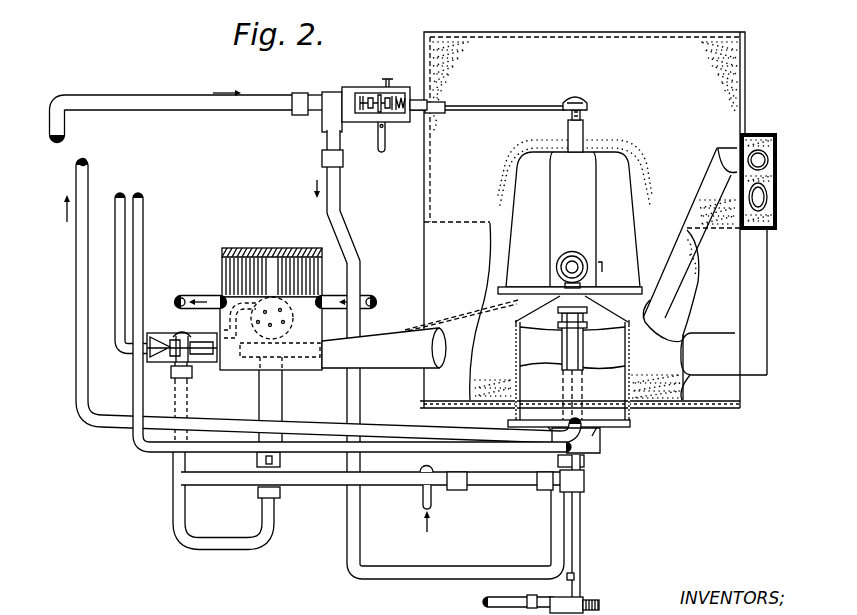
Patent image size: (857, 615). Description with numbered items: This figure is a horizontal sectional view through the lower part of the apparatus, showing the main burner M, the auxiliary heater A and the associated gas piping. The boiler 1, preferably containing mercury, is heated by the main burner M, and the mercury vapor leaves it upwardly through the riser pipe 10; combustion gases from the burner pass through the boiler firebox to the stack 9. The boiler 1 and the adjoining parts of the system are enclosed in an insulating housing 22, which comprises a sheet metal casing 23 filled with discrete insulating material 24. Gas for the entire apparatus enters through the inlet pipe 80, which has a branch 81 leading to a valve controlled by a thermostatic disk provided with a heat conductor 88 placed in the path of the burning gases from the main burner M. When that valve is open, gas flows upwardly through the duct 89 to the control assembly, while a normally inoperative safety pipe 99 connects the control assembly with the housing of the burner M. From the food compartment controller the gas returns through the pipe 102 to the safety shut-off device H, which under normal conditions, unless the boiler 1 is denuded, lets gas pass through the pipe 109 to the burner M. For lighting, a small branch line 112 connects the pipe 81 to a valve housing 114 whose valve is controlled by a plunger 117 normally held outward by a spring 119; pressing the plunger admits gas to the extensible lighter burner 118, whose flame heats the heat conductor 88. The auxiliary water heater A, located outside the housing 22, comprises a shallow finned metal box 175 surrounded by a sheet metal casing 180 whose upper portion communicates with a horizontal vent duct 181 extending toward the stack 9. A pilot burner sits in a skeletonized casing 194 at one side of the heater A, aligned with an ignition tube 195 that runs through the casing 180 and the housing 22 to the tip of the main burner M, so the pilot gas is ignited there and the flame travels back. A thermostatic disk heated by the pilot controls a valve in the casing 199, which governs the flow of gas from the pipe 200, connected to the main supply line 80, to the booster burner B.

The boiler 1 is at (622, 204).
The stack 9 is at (668, 300).
The riser pipe 10 is at (574, 252).
The insulating housing 22 is at (748, 93).
The sheet metal casing 23 is at (748, 62).
The insulating material 24 is at (547, 106).
The inlet pipe 80 is at (418, 498).
The branch 81 is at (497, 488).
The heat conductor 88 is at (598, 270).
The duct 89 is at (77, 372).
The safety pipe 99 is at (131, 393).
The pipe 102 is at (158, 104).
The pipe 109 is at (340, 191).
The branch line 112 is at (495, 600).
The valve housing 114 is at (574, 597).
The plunger 117 is at (597, 608).
The lighter burner 118 is at (576, 575).
The spring 119 is at (589, 597).
The shallow metal box 175 is at (223, 268).
The sheet metal casing 180 is at (254, 248).
The vent duct 181 is at (378, 362).
The skeletonized casing 194 is at (192, 368).
The ignition tube 195 is at (486, 322).
The casing 199 is at (182, 334).
The pipe 200 is at (307, 485).
The auxiliary water heater A is at (238, 242).
The booster burner B is at (273, 250).
The safety shut-off device H is at (368, 87).
The main burner M is at (644, 442).